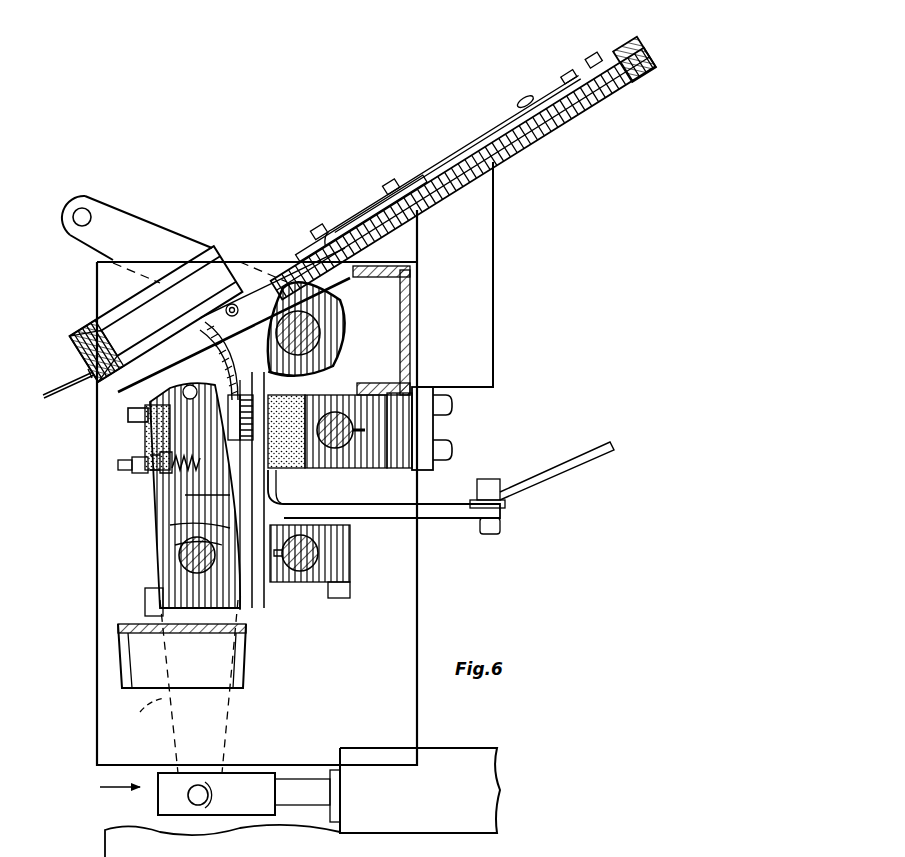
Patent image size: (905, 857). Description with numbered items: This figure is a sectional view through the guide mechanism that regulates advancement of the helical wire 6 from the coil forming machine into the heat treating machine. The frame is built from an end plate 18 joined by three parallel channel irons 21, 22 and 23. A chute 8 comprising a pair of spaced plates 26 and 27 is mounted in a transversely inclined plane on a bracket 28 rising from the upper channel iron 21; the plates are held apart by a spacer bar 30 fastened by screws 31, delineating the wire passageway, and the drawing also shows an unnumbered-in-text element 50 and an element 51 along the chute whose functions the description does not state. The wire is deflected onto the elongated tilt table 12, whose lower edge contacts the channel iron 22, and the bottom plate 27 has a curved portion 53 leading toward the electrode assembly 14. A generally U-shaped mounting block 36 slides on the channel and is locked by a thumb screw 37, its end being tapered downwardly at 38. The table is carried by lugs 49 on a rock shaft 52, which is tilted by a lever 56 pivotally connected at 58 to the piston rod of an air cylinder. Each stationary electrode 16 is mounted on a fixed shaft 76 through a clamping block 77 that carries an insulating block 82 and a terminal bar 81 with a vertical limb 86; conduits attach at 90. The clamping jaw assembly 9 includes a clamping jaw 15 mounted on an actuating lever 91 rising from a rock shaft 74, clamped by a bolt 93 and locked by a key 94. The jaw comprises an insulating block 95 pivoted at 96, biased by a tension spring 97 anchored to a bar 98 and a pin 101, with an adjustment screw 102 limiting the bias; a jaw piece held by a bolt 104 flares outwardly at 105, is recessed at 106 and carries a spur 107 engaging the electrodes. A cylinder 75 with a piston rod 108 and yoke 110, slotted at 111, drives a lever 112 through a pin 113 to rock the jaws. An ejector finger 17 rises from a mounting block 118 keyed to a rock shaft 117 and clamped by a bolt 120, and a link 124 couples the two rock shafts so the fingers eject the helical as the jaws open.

The helical wire 6 is at (262, 283).
The chute 8 is at (530, 95).
The clamping jaw assembly 9 is at (165, 500).
The tilt table 12 is at (286, 283).
The electrode assembly 14 is at (425, 432).
The clamping jaw 15 is at (200, 340).
The stationary electrode 16 is at (258, 364).
The ejector finger 17 is at (265, 580).
The end plate 18 is at (417, 706).
The upper channel iron 21 is at (410, 280).
The channel iron 22 is at (112, 308).
The channel iron 23 is at (120, 660).
The plate 26 is at (568, 78).
The bottom plate 27 is at (600, 115).
The bracket 28 is at (493, 205).
The spacer bar 30 is at (650, 58).
The screw 31 is at (393, 186).
The mounting block 36 is at (75, 338).
The thumb screw 37 is at (70, 374).
The tapered end 38 is at (226, 308).
The lug 49 is at (333, 350).
The plate 50 is at (360, 212).
The strip 51 is at (488, 125).
The rock shaft 52 is at (320, 326).
The curved portion 53 is at (296, 376).
The lever 56 is at (128, 216).
The pivotal connection 58 is at (86, 208).
The rock shaft 74 is at (180, 560).
The cylinder 75 is at (492, 768).
The fixed shaft 76 is at (353, 420).
The clamping block 77 is at (360, 400).
The terminal bar 81 is at (438, 510).
The insulating block 82 is at (285, 468).
The vertical limb 86 is at (250, 505).
The conduit attachment 90 is at (488, 480).
The actuating lever 91 is at (170, 526).
The bolt 93 is at (147, 598).
The key 94 is at (170, 545).
The block 95 is at (150, 432).
The pivot 96 is at (183, 392).
The tension spring 97 is at (172, 478).
The bar 98 is at (145, 458).
The pin 101 is at (199, 488).
The adjustment screw 102 is at (120, 466).
The bolt 104 is at (128, 414).
The flared upper portion 105 is at (204, 325).
The recess 106 is at (228, 432).
The spur 107 is at (246, 444).
The piston rod 108 is at (318, 780).
The yoke 110 is at (255, 773).
The slot 111 is at (208, 785).
The lever 112 is at (179, 686).
The pin 113 is at (198, 795).
The rock shaft 117 is at (333, 540).
The mounting block 118 is at (292, 582).
The bolt 120 is at (340, 598).
The link 124 is at (222, 841).